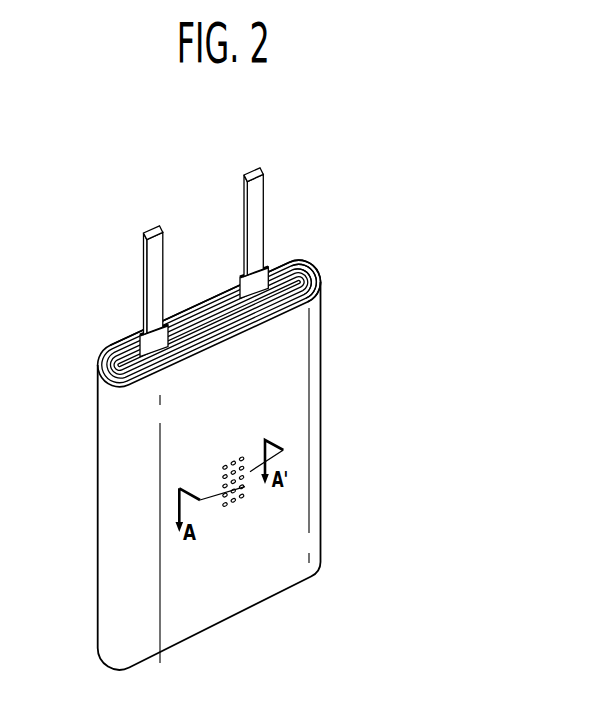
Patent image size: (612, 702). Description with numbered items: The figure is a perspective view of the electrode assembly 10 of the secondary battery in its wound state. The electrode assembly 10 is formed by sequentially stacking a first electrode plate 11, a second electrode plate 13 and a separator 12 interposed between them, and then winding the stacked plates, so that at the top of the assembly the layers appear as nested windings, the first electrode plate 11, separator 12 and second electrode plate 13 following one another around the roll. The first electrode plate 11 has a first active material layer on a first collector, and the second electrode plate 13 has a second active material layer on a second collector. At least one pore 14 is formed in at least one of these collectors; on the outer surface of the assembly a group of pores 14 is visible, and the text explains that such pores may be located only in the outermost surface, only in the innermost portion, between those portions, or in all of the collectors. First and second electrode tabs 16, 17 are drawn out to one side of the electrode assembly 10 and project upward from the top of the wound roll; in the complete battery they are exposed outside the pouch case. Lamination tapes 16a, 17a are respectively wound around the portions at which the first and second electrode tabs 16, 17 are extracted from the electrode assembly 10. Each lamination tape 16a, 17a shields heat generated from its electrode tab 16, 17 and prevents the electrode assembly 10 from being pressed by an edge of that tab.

The electrode assembly 10 is at (357, 188).
The first electrode plate 11 is at (320, 280).
The separator 12 is at (318, 275).
The second electrode plate 13 is at (305, 263).
The pore 14 is at (242, 493).
The first electrode tab 16 is at (158, 232).
The lamination tape 16a is at (145, 352).
The second electrode tab 17 is at (255, 178).
The lamination tape 17a is at (243, 290).